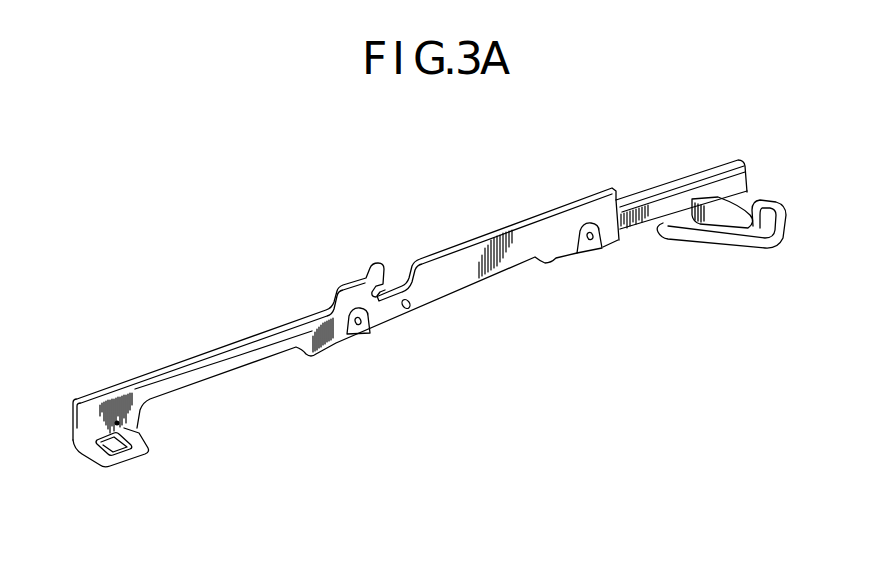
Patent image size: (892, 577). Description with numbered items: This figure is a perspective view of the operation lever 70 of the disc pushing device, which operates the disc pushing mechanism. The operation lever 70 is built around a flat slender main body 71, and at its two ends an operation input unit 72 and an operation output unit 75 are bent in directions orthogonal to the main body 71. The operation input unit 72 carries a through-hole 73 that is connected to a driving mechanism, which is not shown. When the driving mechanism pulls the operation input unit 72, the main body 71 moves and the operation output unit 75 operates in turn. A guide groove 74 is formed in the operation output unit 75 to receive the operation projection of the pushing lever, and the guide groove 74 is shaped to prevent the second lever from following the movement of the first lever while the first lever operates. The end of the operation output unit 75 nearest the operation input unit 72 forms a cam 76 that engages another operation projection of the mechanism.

The operation lever 70 is at (309, 204).
The main body 71 is at (457, 277).
The operation input unit 72 is at (132, 440).
The through-hole 73 is at (104, 455).
The guide groove 74 is at (706, 218).
The operation output unit 75 is at (679, 300).
The cam 76 is at (734, 246).